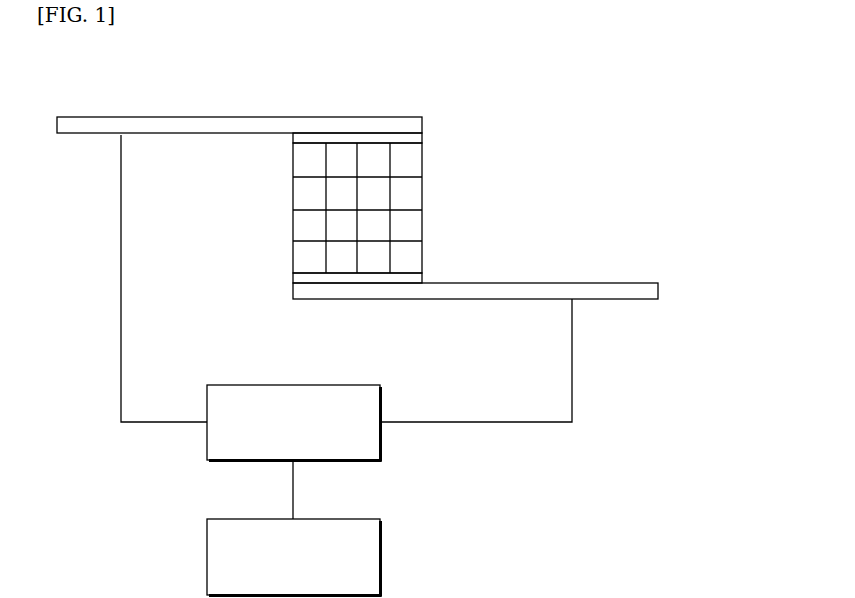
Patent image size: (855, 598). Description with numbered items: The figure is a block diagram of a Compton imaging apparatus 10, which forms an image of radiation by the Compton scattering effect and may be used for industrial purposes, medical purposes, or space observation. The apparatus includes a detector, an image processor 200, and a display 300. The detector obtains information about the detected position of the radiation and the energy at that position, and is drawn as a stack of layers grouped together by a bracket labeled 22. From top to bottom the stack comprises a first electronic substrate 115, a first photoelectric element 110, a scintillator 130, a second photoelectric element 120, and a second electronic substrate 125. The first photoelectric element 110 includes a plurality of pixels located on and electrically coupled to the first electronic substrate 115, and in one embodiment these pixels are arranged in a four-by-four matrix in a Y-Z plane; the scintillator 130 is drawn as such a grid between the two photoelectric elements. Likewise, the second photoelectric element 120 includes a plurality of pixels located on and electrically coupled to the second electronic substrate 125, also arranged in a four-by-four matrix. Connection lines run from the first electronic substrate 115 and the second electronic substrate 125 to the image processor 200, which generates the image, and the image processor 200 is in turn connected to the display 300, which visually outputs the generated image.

The Compton imaging apparatus 10 is at (113, 60).
The detector panel stack 22 is at (518, 112).
The first electronic substrate 115 is at (412, 125).
The first photoelectric element 110 is at (413, 140).
The scintillator 130 is at (405, 217).
The second photoelectric element 120 is at (409, 278).
The second electronic substrate 125 is at (430, 290).
The image processor 200 is at (330, 385).
The display 300 is at (333, 519).